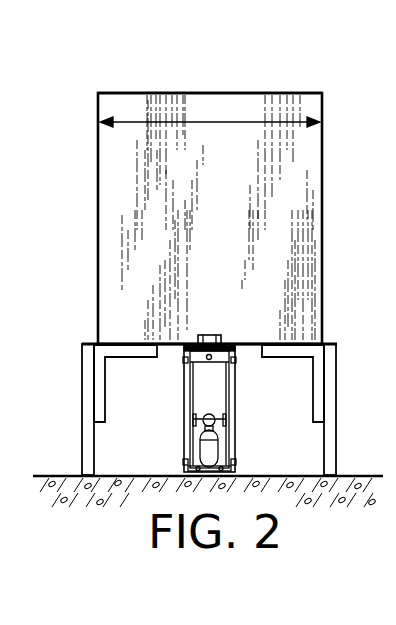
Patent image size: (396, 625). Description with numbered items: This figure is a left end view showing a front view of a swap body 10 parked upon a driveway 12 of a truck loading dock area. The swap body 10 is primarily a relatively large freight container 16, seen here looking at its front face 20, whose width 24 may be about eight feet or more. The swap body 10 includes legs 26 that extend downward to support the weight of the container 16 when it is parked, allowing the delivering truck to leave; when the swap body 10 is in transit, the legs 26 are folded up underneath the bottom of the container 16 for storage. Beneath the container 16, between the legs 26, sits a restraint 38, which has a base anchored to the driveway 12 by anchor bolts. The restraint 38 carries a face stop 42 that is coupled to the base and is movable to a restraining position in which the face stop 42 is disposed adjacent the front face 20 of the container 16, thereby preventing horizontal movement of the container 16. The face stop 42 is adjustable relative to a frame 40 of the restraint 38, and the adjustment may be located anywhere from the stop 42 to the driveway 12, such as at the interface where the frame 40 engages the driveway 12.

The swap body 10 is at (239, 76).
The driveway 12 is at (252, 474).
The freight container 16 is at (213, 92).
The front face 20 is at (233, 236).
The width 24 is at (224, 124).
The legs 26 is at (96, 460).
The restraint 38 is at (247, 428).
The frame 40 is at (184, 420).
The face stop 42 is at (210, 334).